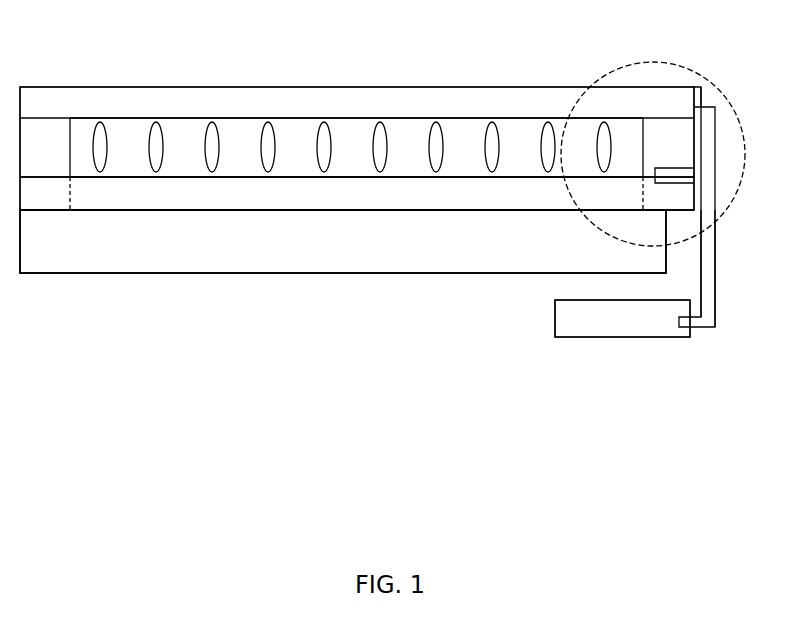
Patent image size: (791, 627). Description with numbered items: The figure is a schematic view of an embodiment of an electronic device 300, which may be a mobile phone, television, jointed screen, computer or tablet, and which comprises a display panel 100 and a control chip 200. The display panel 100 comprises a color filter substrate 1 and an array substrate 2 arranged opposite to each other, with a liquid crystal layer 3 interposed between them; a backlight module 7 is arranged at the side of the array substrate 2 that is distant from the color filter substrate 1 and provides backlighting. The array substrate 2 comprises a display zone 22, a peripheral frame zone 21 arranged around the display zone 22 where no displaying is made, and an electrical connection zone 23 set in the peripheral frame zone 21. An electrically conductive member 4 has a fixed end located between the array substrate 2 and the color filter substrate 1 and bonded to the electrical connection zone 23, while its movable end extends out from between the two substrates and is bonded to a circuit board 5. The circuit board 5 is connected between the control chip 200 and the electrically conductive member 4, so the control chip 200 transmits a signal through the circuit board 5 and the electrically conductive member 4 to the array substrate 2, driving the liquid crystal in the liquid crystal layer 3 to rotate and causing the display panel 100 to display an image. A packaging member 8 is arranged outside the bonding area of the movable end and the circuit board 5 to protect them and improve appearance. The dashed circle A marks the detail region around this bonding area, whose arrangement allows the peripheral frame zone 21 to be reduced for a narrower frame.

The color filter substrate 1 is at (202, 100).
The array substrate 2 is at (88, 322).
The liquid crystal layer 3 is at (269, 128).
The electrically conductive member 4 is at (702, 108).
The circuit board 5 is at (708, 280).
The backlight module 7 is at (258, 250).
The packaging member 8 is at (700, 112).
The peripheral frame zone 21 is at (40, 195).
The display zone 22 is at (183, 195).
The electrical connection zone 23 is at (673, 182).
The display panel 100 is at (358, 305).
The control chip 200 is at (578, 320).
The electronic device 300 is at (425, 397).
The detail region A is at (612, 72).